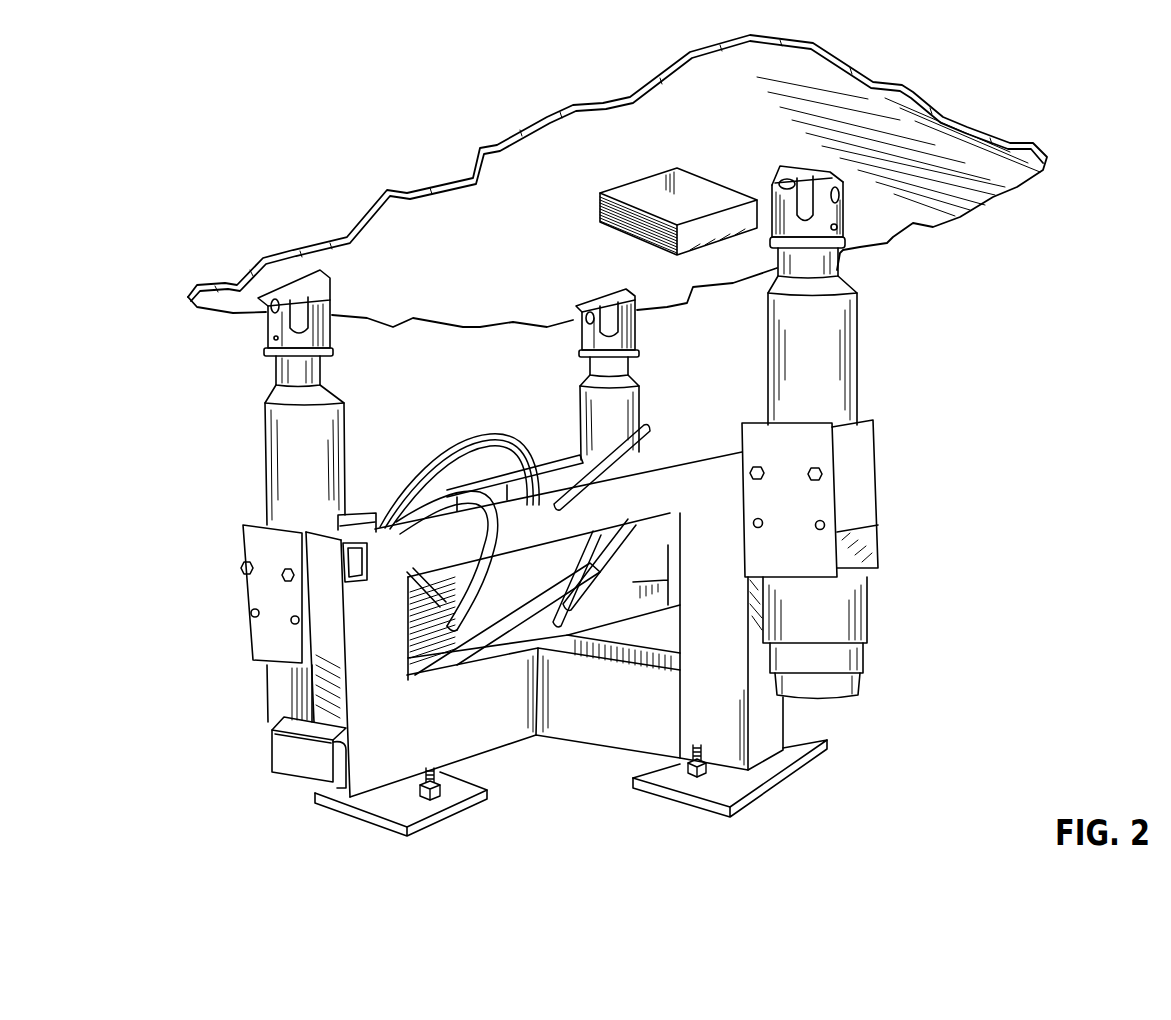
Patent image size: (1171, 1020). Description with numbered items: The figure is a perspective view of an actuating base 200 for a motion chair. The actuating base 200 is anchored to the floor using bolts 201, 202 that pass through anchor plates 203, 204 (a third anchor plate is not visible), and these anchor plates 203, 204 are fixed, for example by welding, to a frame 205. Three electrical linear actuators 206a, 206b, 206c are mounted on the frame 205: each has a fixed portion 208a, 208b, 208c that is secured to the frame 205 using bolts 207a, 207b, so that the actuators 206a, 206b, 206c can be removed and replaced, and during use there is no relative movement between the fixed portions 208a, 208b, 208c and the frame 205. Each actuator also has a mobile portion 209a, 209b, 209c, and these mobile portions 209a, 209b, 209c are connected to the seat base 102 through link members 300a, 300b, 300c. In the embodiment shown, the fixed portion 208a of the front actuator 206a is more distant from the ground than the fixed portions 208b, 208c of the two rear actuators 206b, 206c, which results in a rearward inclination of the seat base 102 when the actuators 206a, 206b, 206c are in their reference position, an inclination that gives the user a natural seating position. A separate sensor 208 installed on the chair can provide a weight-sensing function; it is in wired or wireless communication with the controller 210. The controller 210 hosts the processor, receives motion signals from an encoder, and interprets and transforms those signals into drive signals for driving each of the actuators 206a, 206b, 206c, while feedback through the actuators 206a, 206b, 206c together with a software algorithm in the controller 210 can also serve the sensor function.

The seat base 102 is at (607, 127).
The actuating base 200 is at (1017, 327).
The bolt 201 is at (710, 763).
The bolt 202 is at (433, 775).
The anchor plate 203 is at (745, 793).
The anchor plate 204 is at (467, 805).
The frame 205 is at (777, 710).
The front actuator 206a is at (892, 380).
The rear actuator 206b is at (302, 529).
The rear actuator 206c is at (621, 371).
The bolt 207a is at (817, 476).
The bolt 207b is at (757, 476).
The sensor 208 is at (693, 228).
The fixed portion of front actuator 208a is at (853, 612).
The fixed portion of rear actuator 208b is at (287, 488).
The fixed portion of rear actuator 208c is at (590, 417).
The mobile portion of front actuator 209a is at (838, 264).
The mobile portion of rear actuator 209b is at (283, 370).
The mobile portion of rear actuator 209c is at (620, 358).
The controller 210 is at (507, 437).
The link member 300a is at (813, 163).
The link member 300b is at (345, 338).
The link member 300c is at (595, 293).